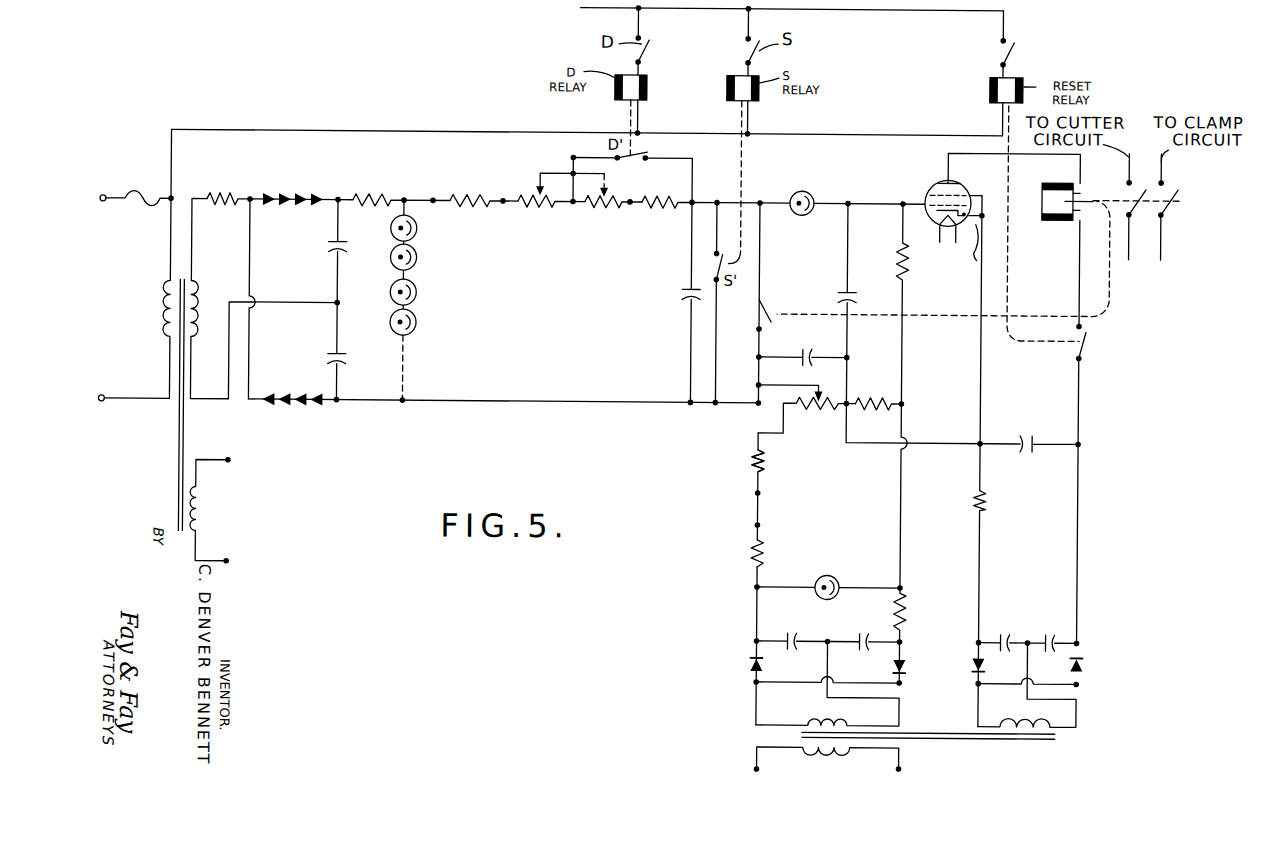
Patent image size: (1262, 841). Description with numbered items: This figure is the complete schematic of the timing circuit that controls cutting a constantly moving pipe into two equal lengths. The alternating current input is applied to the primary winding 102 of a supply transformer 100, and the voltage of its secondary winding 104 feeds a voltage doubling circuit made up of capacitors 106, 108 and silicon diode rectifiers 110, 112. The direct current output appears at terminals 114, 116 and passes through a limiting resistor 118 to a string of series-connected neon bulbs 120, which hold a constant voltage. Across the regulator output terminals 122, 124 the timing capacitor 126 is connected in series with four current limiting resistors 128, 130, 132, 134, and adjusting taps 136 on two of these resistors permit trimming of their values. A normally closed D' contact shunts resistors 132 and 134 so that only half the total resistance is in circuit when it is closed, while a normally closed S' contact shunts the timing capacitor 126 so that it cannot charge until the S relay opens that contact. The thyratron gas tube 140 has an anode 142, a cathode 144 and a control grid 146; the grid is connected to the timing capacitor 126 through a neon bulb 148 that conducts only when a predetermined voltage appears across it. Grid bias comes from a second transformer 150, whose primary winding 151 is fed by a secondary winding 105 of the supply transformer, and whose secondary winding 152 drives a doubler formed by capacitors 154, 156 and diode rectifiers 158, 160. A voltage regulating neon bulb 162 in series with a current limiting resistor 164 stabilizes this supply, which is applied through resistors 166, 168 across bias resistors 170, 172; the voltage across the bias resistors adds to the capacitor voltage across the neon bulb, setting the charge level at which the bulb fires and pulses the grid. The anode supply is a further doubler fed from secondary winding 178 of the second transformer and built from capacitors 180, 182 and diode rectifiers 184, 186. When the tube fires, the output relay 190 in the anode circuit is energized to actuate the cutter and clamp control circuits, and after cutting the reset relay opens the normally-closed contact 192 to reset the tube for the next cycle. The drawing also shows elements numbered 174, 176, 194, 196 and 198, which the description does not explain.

The transformer 100 is at (219, 362).
The primary winding 102 is at (166, 300).
The secondary winding 104 is at (196, 302).
The secondary winding 105 is at (204, 510).
The capacitor 106 is at (330, 247).
The capacitor 108 is at (330, 360).
The silicon diode rectifier 110 is at (300, 196).
The silicon diode rectifier 112 is at (297, 406).
The terminal 114 is at (338, 196).
The terminal 116 is at (338, 406).
The limiting resistor 118 is at (372, 196).
The series-connected neon bulbs 120 is at (418, 296).
The output terminal 122 is at (406, 196).
The output terminal 124 is at (404, 406).
The timing capacitor 126 is at (682, 293).
The current limiting resistor 128 is at (470, 196).
The current limiting resistor 130 is at (539, 208).
The current limiting resistor 132 is at (603, 208).
The current limiting resistor 134 is at (664, 208).
The adjusting taps 136 is at (538, 184).
The thyratron gas tube 140 is at (925, 177).
The anode 142 is at (950, 170).
The cathode 144 is at (959, 251).
The control grid 146 is at (909, 200).
The neon bulb 148 is at (802, 190).
The transformer 150 is at (758, 734).
The primary winding 151 is at (820, 752).
The secondary winding 152 is at (814, 725).
The capacitor 154 is at (791, 632).
The capacitor 156 is at (862, 631).
The diode rectifier 158 is at (754, 665).
The diode rectifier 160 is at (908, 664).
The voltage regulating neon bulb 162 is at (834, 575).
The current limiting resistor 164 is at (906, 622).
The resistor 166 is at (767, 549).
The resistor 168 is at (767, 460).
The bias resistor 170 is at (819, 410).
The bias resistor 172 is at (872, 409).
The tap 174 is at (763, 492).
The tap 176 is at (763, 524).
The secondary winding 178 is at (1026, 722).
The capacitor 180 is at (1004, 630).
The capacitor 182 is at (1049, 630).
The diode rectifier 184 is at (972, 661).
The diode rectifier 186 is at (1084, 669).
The output relay 190 is at (1063, 225).
The normally-closed contact 192 is at (1088, 340).
The switch 194 is at (772, 318).
The capacitor 196 is at (805, 348).
The capacitor 198 is at (838, 294).